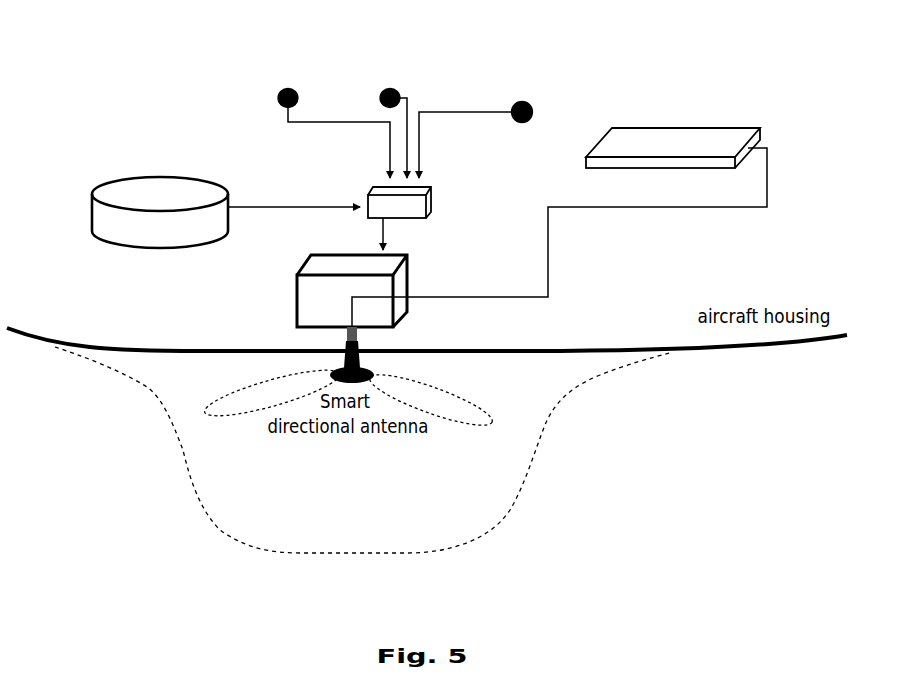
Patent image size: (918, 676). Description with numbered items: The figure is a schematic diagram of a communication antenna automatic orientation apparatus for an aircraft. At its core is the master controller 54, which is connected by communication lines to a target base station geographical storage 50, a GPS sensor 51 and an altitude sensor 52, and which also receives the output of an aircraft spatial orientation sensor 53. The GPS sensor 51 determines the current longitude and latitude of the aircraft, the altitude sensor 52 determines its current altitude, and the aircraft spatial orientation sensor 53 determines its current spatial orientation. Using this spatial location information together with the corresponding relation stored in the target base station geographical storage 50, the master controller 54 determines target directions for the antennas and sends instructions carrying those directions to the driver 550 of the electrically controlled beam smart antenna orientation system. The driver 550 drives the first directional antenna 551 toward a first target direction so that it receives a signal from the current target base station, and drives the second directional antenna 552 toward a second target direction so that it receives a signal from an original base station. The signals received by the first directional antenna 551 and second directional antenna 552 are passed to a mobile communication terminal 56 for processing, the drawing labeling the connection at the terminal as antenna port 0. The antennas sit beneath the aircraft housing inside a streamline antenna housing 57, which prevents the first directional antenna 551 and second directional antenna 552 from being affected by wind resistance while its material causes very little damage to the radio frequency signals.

The target base station geographical storage 50 is at (216, 175).
The GPS sensor 51 is at (316, 103).
The altitude sensor 52 is at (503, 115).
The aircraft spatial orientation sensor 53 is at (407, 95).
The master controller 54 is at (354, 194).
The mobile communication terminal 56 is at (673, 110).
The antenna port 0 is at (559, 237).
The driver 550 is at (312, 292).
The first directional antenna 551 is at (268, 423).
The second directional antenna 552 is at (451, 427).
The antenna housing 57 is at (362, 450).